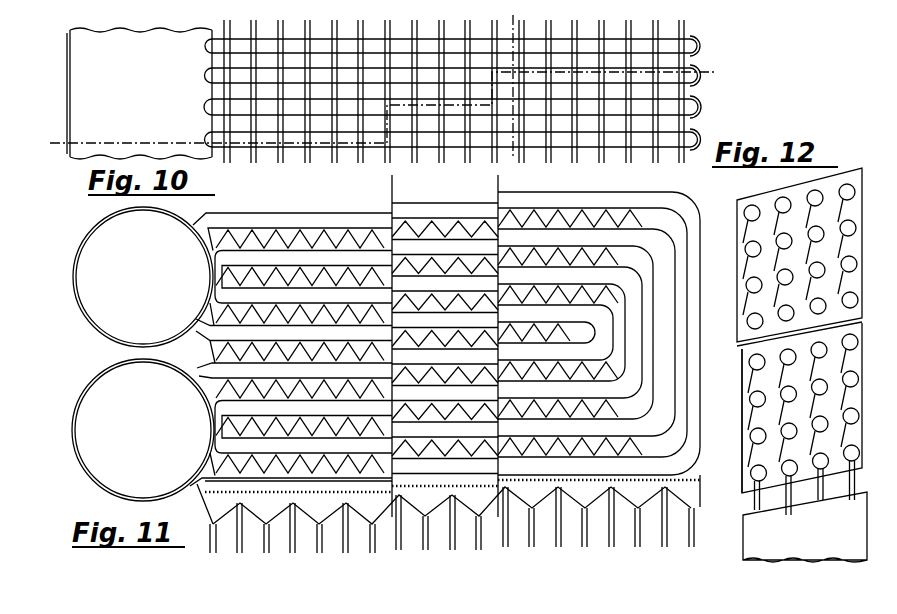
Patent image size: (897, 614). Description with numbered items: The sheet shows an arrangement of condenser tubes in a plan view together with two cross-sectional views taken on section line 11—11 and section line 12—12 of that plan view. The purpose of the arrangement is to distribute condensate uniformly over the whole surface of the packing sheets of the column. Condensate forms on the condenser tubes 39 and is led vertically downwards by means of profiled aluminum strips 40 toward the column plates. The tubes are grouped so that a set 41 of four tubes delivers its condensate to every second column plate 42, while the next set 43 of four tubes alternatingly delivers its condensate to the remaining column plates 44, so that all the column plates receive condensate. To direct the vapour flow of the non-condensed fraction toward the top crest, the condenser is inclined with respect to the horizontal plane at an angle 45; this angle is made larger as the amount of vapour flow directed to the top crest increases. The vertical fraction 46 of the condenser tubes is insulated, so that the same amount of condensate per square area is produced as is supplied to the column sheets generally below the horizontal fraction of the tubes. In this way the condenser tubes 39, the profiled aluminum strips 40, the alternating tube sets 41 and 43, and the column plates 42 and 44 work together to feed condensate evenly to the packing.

In FIG. 10, the section line 11— 11 is at (716, 58).
In FIG. 10, the section line 12— 12 is at (500, 160).
In FIG. 10, the condenser tubes 39 is at (336, 130).
In FIG. 11, the profiled aluminum strips 40 is at (350, 430).
In FIG. 11, the set of four tubes 41 is at (207, 472).
In FIG. 12, the set of four tubes 41 is at (748, 445).
In FIG. 11, the column plate 42 is at (452, 555).
In FIG. 11, the next set of four tubes 43 is at (486, 470).
In FIG. 12, the next set of four tubes 43 is at (812, 432).
In FIG. 11, the remaining column plates 44 is at (427, 524).
In FIG. 12, the remaining column plates 44 is at (805, 488).
In FIG. 12, the angle of inclination 45 is at (818, 178).
In FIG. 11, the vertical fraction of the condenser tubes 46 is at (699, 462).